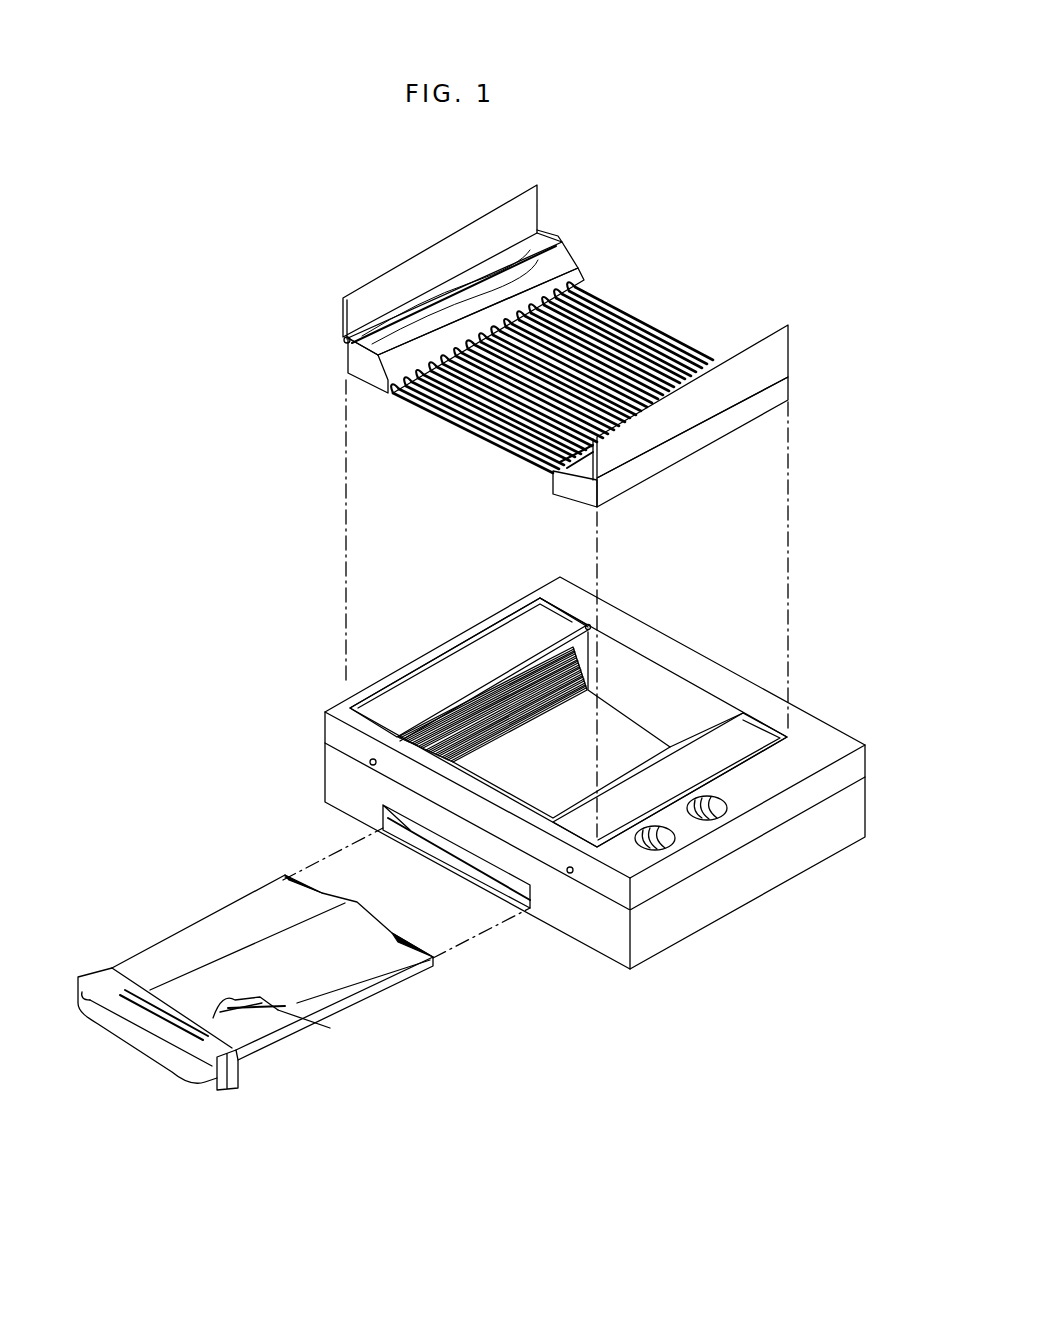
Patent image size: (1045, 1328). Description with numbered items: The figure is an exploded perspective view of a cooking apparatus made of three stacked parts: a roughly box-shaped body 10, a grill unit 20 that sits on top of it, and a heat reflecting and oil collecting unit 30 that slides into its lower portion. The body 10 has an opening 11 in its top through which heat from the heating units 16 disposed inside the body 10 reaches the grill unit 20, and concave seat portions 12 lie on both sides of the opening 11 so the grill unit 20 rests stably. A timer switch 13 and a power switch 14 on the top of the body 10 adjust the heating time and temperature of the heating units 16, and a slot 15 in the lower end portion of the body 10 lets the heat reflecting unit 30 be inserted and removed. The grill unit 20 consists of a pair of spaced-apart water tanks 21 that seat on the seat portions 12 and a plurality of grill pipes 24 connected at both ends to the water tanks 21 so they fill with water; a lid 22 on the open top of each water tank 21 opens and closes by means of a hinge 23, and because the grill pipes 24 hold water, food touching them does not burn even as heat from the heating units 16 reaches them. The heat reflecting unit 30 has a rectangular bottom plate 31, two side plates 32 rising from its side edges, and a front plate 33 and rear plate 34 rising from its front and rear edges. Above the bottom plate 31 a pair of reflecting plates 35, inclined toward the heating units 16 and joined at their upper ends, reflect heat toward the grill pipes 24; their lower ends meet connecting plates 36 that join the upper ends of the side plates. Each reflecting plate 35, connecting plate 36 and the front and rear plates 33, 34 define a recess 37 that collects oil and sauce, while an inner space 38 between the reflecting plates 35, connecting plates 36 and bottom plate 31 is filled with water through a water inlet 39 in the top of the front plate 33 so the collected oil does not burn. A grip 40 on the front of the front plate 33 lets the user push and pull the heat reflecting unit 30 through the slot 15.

The body 10 is at (600, 788).
The opening 11 is at (682, 681).
The concave seat portions 12 is at (450, 662).
The timer switch 13 is at (675, 838).
The power switch 14 is at (728, 810).
The slot 15 is at (530, 905).
The heating units 16 is at (453, 723).
The grill unit 20 is at (535, 344).
The water tanks 21 is at (350, 372).
The lid 22 is at (489, 212).
The hinge 23 is at (343, 340).
The grill pipes 24 is at (472, 440).
The heat reflecting and oil collecting unit 30 is at (266, 1012).
The bottom plate 31 is at (268, 1062).
The side plates 32 is at (327, 1028).
The front plate 33 is at (217, 1078).
The rear plate 34 is at (327, 892).
The reflecting plates 35 is at (263, 935).
The connecting plates 36 is at (140, 972).
The recess 37 is at (208, 964).
The inner space 38 is at (300, 1012).
The water inlet 39 is at (100, 970).
The grip 40 is at (135, 1048).